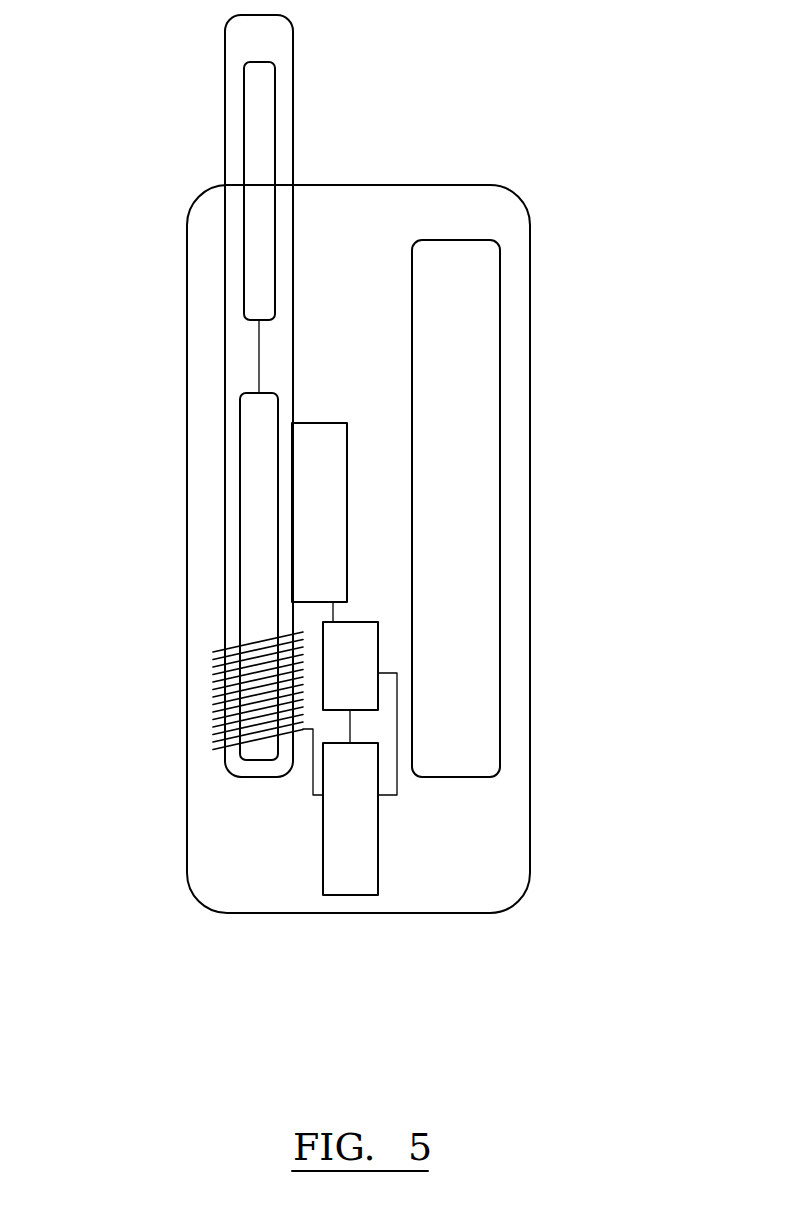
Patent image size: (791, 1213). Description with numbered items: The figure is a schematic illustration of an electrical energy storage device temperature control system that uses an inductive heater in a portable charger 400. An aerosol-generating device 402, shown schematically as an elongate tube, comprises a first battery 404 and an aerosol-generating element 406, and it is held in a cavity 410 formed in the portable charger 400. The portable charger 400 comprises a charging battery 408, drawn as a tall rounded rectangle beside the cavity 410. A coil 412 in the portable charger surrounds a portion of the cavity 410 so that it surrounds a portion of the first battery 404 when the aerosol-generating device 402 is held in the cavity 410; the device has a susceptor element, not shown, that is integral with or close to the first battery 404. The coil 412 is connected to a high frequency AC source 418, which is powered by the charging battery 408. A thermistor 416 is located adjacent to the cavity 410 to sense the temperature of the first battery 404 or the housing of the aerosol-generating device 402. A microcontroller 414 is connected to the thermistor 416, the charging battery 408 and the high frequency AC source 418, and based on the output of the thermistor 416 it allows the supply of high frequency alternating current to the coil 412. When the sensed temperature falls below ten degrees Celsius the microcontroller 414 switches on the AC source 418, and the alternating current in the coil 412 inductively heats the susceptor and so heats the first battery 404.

The portable charger 400 is at (420, 187).
The aerosol-generating device 402 is at (293, 135).
The first battery 404 is at (241, 483).
The aerosol-generating element 406 is at (244, 125).
The charging battery 408 is at (500, 387).
The cavity 410 is at (225, 345).
The coil 412 is at (210, 650).
The microcontroller 414 is at (378, 643).
The thermistor 416 is at (347, 524).
The high frequency AC source 418 is at (378, 848).